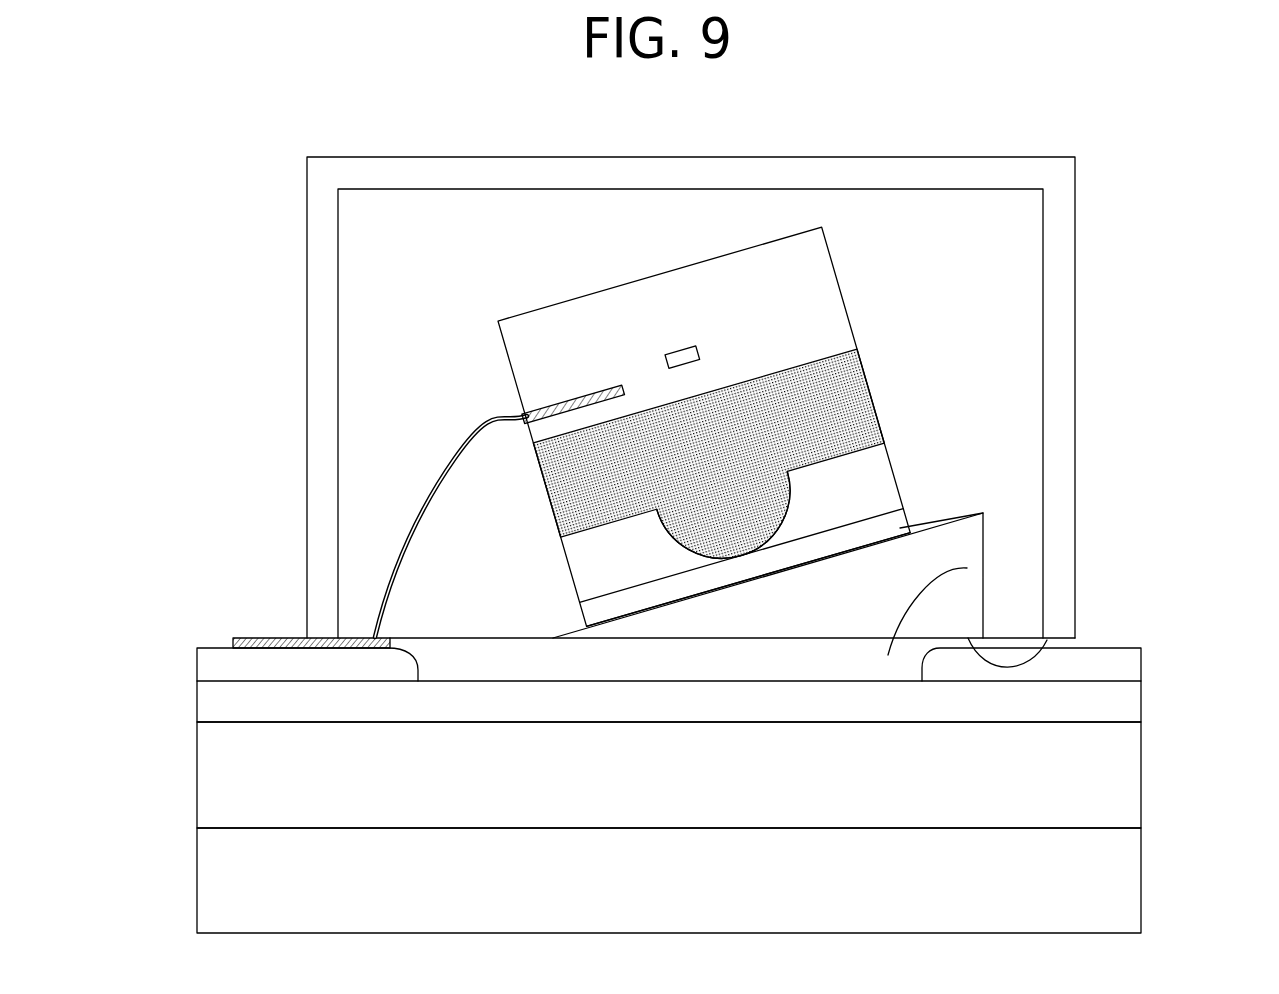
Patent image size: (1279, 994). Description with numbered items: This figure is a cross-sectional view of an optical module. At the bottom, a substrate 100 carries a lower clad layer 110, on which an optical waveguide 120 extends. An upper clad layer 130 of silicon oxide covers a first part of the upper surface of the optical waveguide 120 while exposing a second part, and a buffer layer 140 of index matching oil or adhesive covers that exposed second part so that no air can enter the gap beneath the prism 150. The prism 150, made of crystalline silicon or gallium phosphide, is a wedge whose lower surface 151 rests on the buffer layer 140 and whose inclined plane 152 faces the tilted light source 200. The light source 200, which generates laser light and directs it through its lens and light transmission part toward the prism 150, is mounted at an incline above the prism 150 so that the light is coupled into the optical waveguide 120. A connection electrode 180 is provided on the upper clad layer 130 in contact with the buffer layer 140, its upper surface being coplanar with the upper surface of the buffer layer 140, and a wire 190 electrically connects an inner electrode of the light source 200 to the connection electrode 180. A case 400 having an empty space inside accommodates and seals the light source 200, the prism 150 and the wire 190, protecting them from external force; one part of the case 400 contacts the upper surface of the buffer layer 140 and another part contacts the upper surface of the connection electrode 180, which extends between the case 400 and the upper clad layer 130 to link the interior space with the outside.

The substrate 100 is at (1132, 875).
The lower clad layer 110 is at (1132, 772).
The optical waveguide 120 is at (1132, 697).
The upper clad layer 130 is at (207, 665).
The buffer layer 140 is at (967, 568).
The prism 150 is at (972, 542).
The lower surface 151 is at (1047, 640).
The inclined plane 152 is at (967, 514).
The connection electrode 180 is at (240, 638).
The wire 190 is at (447, 459).
The light source 200 is at (716, 427).
The case 400 is at (318, 233).